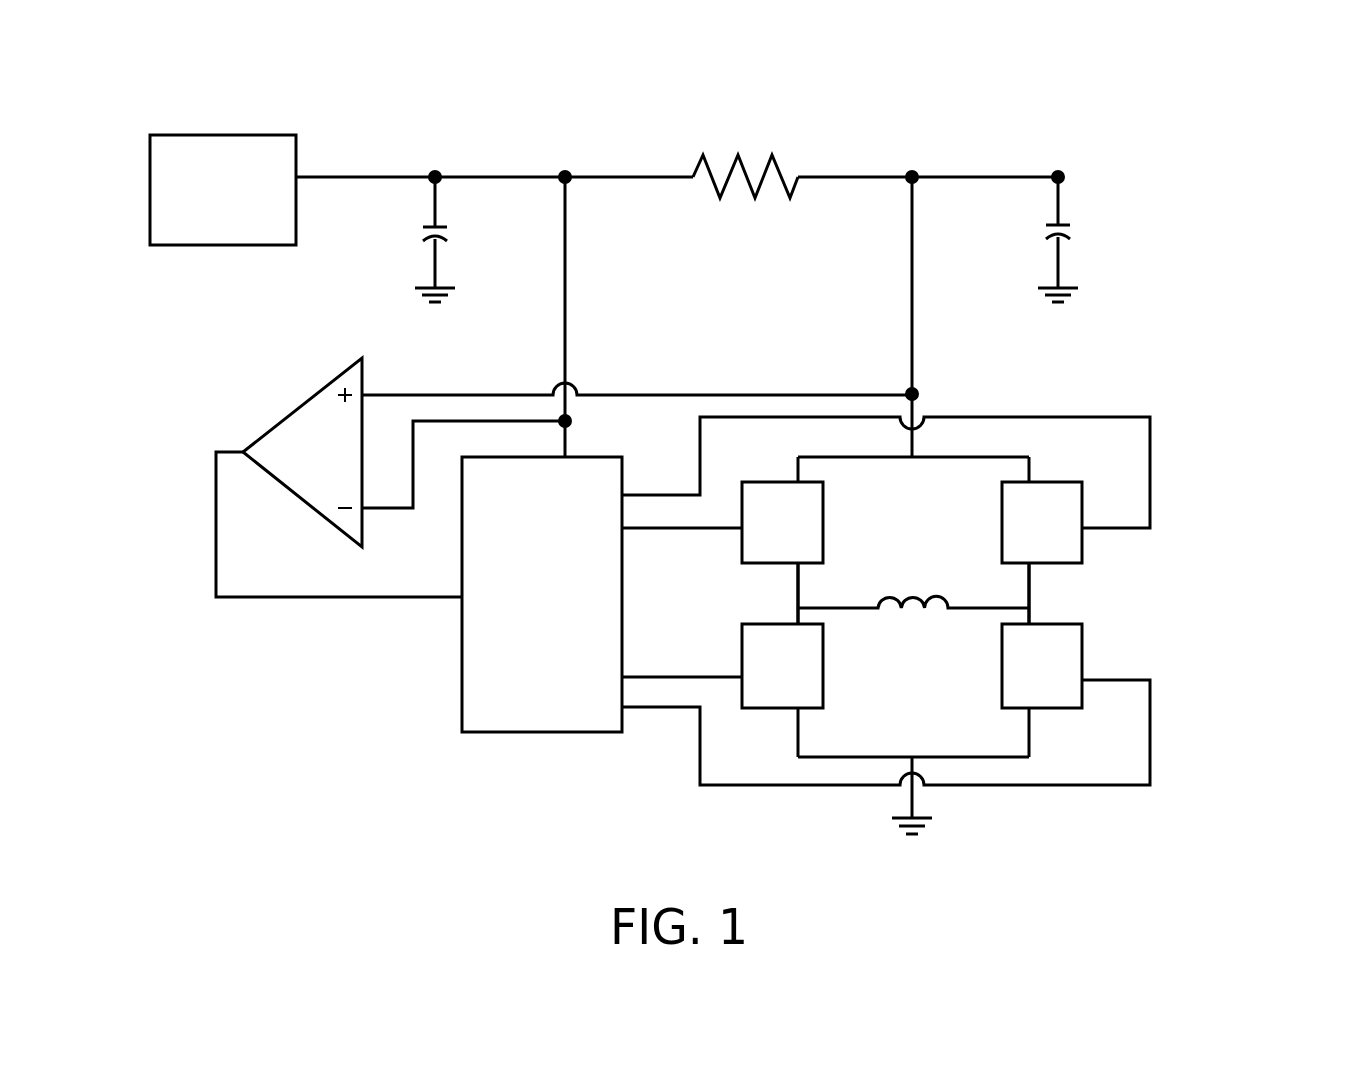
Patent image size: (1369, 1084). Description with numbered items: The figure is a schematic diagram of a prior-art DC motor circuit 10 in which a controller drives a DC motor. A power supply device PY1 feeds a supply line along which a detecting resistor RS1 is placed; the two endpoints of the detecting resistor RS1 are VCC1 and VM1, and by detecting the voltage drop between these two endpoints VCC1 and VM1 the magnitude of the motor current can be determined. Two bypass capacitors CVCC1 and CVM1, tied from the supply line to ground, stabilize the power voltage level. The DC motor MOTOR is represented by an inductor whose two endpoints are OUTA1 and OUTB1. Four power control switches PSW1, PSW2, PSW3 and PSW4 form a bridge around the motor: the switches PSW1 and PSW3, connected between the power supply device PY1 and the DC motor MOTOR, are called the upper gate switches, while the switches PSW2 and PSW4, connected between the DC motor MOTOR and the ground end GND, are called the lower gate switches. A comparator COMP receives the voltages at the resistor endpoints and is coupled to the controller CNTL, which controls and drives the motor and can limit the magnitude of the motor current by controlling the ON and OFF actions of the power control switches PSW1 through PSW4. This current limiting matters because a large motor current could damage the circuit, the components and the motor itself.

The DC motor circuit 10 is at (1187, 147).
The power supply device PY1 is at (170, 134).
The bypass capacitor CVCC1 is at (396, 239).
The endpoint of the detecting resistor VCC1 is at (578, 296).
The detecting resistor RS1 is at (745, 154).
The endpoint of the detecting resistor VM1 is at (921, 296).
The bypass capacitor CVM1 is at (1096, 239).
The comparator COMP is at (289, 413).
The controller CNTL is at (460, 672).
The power control switch PSW1 is at (782, 522).
The power control switch PSW2 is at (1042, 666).
The power control switch PSW3 is at (1042, 522).
The power control switch PSW4 is at (782, 666).
The DC motor MOTOR is at (913, 584).
The endpoint of the motor OUTA1 is at (749, 593).
The endpoint of the motor OUTB1 is at (1077, 593).
The ground end GND is at (945, 796).